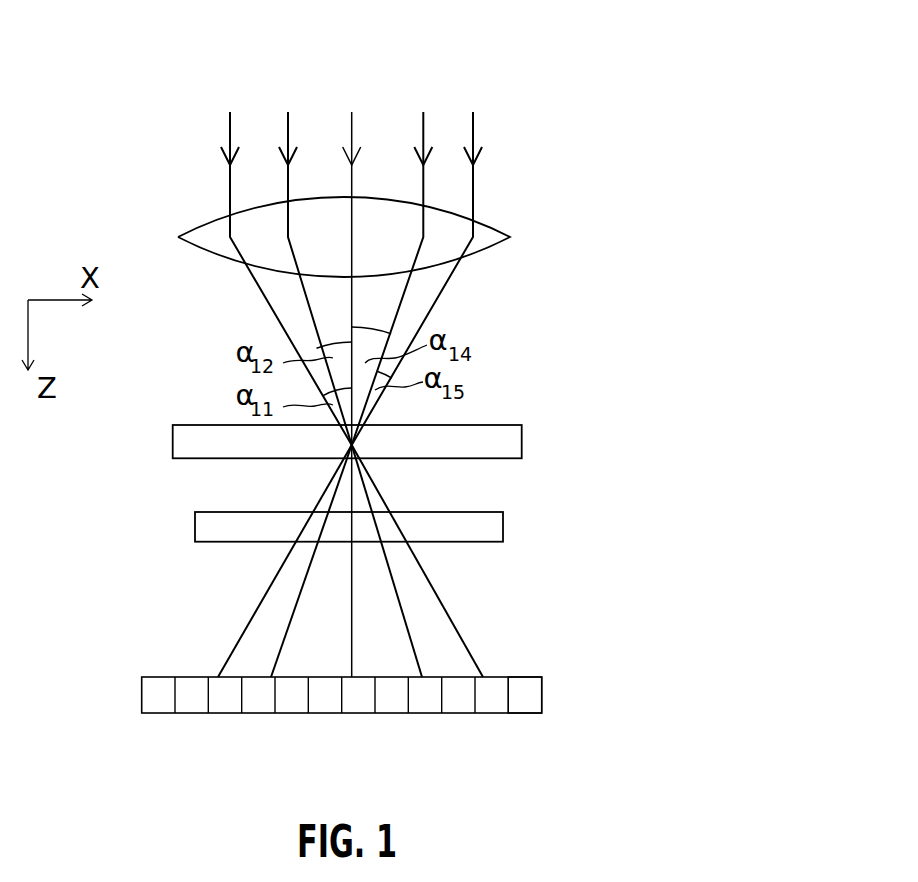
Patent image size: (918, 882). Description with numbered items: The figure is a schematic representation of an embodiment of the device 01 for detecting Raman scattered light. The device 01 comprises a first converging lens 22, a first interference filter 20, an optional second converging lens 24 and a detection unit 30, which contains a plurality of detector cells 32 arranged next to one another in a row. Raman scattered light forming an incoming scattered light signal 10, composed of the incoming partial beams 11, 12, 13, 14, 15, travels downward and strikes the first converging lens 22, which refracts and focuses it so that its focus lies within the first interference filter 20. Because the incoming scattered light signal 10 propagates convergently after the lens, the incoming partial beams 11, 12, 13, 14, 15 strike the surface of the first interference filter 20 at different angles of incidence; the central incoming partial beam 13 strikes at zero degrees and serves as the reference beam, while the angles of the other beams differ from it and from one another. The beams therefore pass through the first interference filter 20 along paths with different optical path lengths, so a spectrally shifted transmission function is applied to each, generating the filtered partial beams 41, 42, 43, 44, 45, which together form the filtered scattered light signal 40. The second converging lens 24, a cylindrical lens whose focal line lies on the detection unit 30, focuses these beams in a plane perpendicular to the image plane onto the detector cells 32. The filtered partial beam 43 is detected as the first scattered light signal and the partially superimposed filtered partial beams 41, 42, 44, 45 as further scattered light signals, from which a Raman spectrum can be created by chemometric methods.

The device 01 is at (130, 145).
The incoming scattered light signal 10 is at (473, 127).
The incoming partial beam 11 is at (230, 192).
The incoming partial beam 12 is at (288, 185).
The central incoming partial beam 13 is at (352, 178).
The incoming partial beam 14 is at (423, 182).
The incoming partial beam 15 is at (473, 182).
The first converging lens 22 is at (485, 230).
The first interference filter 20 is at (508, 425).
The second converging lens 24 is at (478, 512).
The filtered scattered light signal 40 is at (440, 595).
The filtered partial beam 41 is at (465, 640).
The filtered partial beam 42 is at (407, 620).
The filtered partial beam 43 is at (352, 610).
The filtered partial beam 44 is at (303, 587).
The filtered partial beam 45 is at (257, 603).
The detection unit 30 is at (359, 744).
The detector cells 32 is at (523, 702).